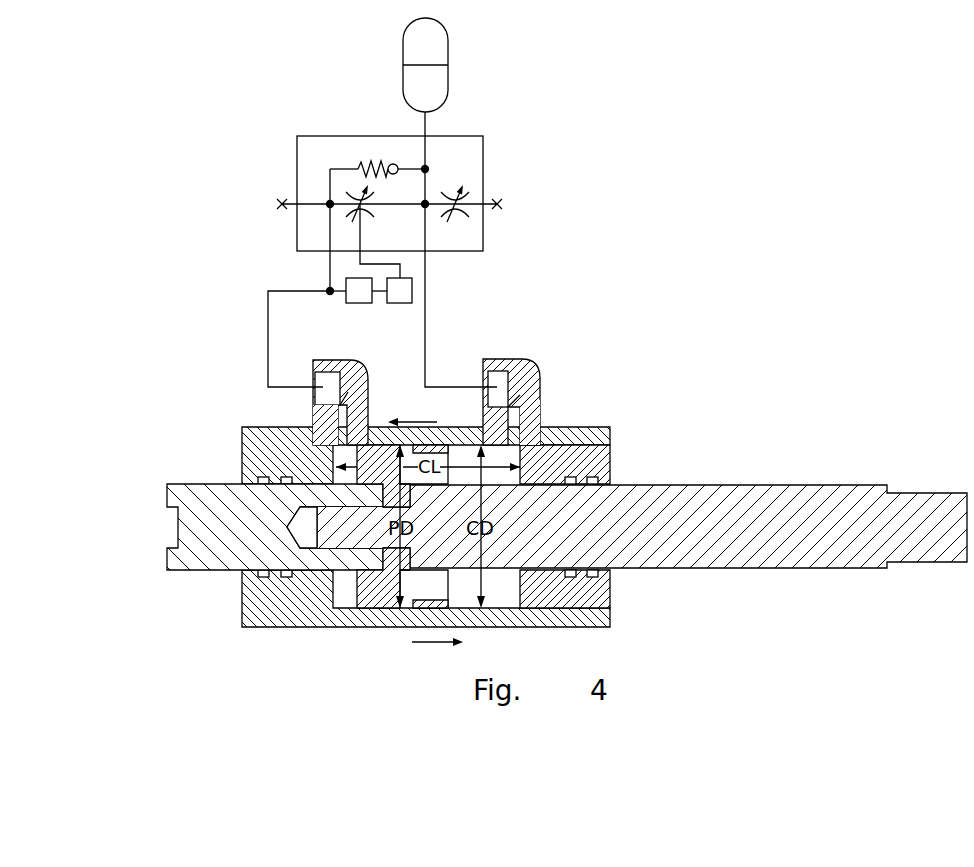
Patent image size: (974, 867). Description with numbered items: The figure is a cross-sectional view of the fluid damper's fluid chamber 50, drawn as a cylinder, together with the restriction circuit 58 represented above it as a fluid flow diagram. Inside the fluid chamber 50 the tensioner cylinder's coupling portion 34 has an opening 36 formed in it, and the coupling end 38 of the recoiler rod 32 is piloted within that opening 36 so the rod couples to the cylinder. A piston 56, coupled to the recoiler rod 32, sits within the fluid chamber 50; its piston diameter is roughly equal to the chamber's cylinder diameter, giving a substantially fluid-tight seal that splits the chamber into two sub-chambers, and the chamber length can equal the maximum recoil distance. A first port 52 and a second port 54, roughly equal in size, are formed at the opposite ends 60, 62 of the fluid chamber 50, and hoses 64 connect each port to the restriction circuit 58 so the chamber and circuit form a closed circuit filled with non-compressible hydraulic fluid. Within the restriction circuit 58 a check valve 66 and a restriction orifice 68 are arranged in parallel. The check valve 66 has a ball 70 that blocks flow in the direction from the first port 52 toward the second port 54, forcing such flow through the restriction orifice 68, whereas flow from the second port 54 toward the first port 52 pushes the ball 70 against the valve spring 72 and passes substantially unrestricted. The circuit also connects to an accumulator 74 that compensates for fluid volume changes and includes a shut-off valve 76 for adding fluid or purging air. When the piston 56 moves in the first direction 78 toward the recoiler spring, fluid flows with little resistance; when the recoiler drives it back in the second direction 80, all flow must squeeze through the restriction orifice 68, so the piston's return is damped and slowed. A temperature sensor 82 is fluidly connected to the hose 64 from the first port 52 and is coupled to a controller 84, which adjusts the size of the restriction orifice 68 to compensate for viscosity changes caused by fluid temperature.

The recoiler rod 32 is at (650, 497).
The coupling portion 34 is at (212, 502).
The opening 36 is at (307, 548).
The coupling end 38 is at (325, 537).
The fluid chamber 50 is at (445, 435).
The first port 52 is at (341, 402).
The second port 54 is at (535, 402).
The piston 56 is at (378, 598).
The restriction circuit 58 is at (272, 137).
The first end of fluid chamber 60 is at (323, 445).
The second end of fluid chamber 62 is at (542, 413).
The hoses 64 is at (268, 327).
The check valve 66 is at (363, 143).
The restriction orifice 68 is at (367, 213).
The ball 70 is at (393, 164).
The valve spring 72 is at (358, 168).
The accumulator 74 is at (442, 80).
The shut-off valve 76 is at (470, 210).
The first direction arrow 78 is at (437, 651).
The second direction arrow 80 is at (412, 413).
The temperature sensor 82 is at (353, 303).
The controller 84 is at (399, 303).